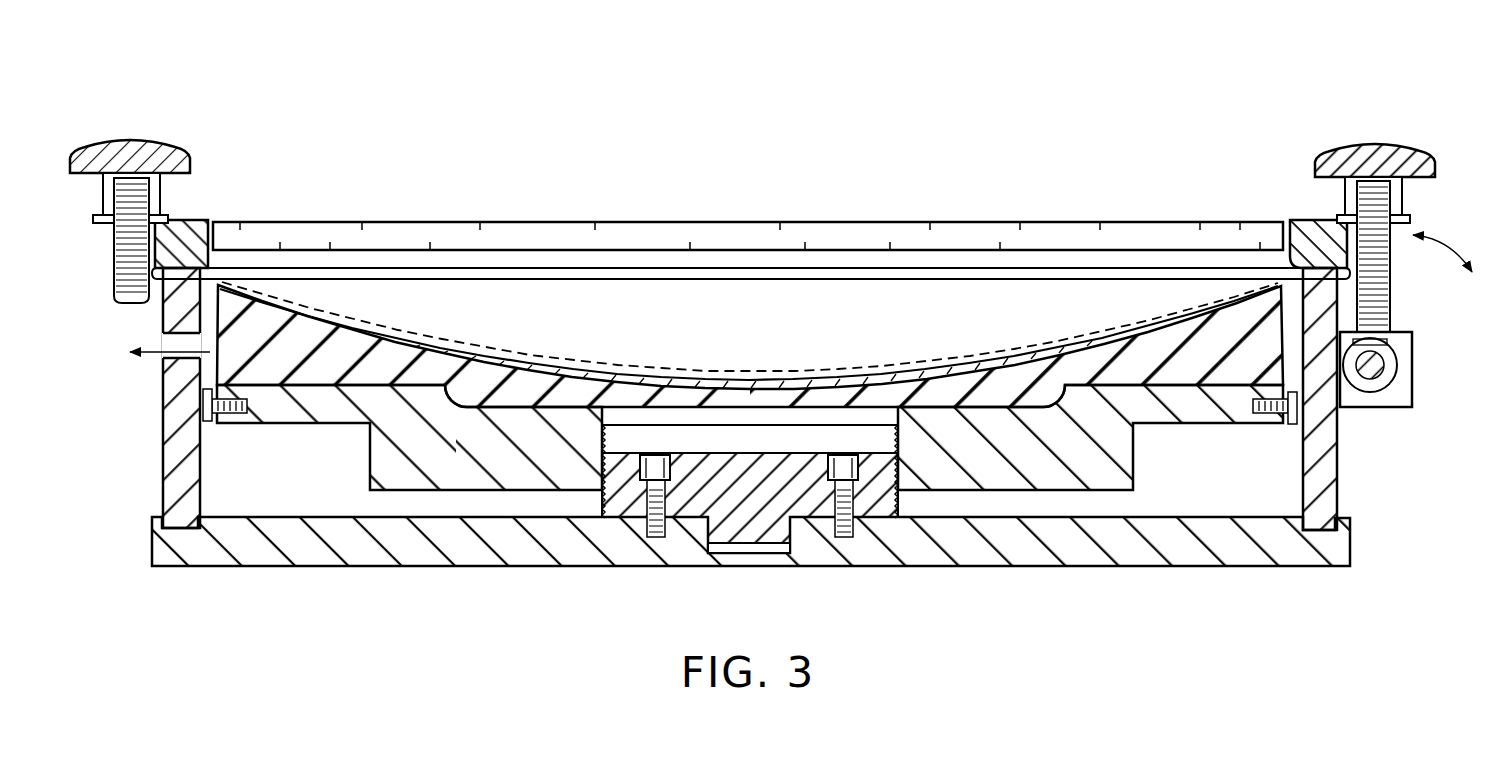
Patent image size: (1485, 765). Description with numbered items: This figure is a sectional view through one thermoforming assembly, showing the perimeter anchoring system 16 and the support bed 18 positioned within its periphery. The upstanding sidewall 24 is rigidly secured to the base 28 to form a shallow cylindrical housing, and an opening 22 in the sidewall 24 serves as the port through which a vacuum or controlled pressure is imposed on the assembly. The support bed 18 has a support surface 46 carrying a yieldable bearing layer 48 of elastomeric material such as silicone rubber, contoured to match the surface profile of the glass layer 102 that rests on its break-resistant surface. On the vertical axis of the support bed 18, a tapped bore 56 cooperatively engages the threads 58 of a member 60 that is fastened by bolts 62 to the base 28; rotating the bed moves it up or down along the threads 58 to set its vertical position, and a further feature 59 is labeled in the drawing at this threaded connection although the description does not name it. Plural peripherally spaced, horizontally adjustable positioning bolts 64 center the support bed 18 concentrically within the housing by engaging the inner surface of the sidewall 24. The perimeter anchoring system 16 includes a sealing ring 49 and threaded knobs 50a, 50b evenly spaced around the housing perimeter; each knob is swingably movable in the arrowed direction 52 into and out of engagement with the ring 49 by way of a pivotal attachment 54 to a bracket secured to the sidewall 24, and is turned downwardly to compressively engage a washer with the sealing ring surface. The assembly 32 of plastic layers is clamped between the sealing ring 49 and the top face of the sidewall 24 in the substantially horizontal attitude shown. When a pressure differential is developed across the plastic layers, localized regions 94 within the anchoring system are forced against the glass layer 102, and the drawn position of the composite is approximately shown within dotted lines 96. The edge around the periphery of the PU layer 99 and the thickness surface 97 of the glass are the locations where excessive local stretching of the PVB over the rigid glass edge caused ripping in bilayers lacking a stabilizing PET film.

The perimeter anchoring system 16 is at (368, 139).
The support bed 18 is at (368, 475).
The opening 22 is at (170, 342).
The upstanding sidewall 24 is at (170, 400).
The base 28 is at (407, 552).
The assembly of plastic layers 32 is at (278, 268).
The support surface 46 is at (310, 395).
The yieldable bearing layer 48 is at (263, 372).
The sealing ring 49 is at (1305, 228).
The threaded knob 50a is at (185, 150).
The threaded knob 50b is at (1327, 152).
The arrowed direction 52 is at (1443, 247).
The pivotal attachment 54 is at (1393, 372).
The tapped bore 56 is at (877, 440).
The threads 58 is at (907, 505).
The channel 59 is at (607, 433).
The member 60 is at (803, 512).
The bolts 62 is at (653, 530).
The positioning bolts 64 is at (1277, 417).
The localized regions 94 is at (610, 285).
The dotted lines 96 is at (1113, 337).
The thickness surface 97 is at (390, 332).
The edge around the periphery of the PU layer 99 is at (382, 318).
The glass layer 102 is at (667, 380).